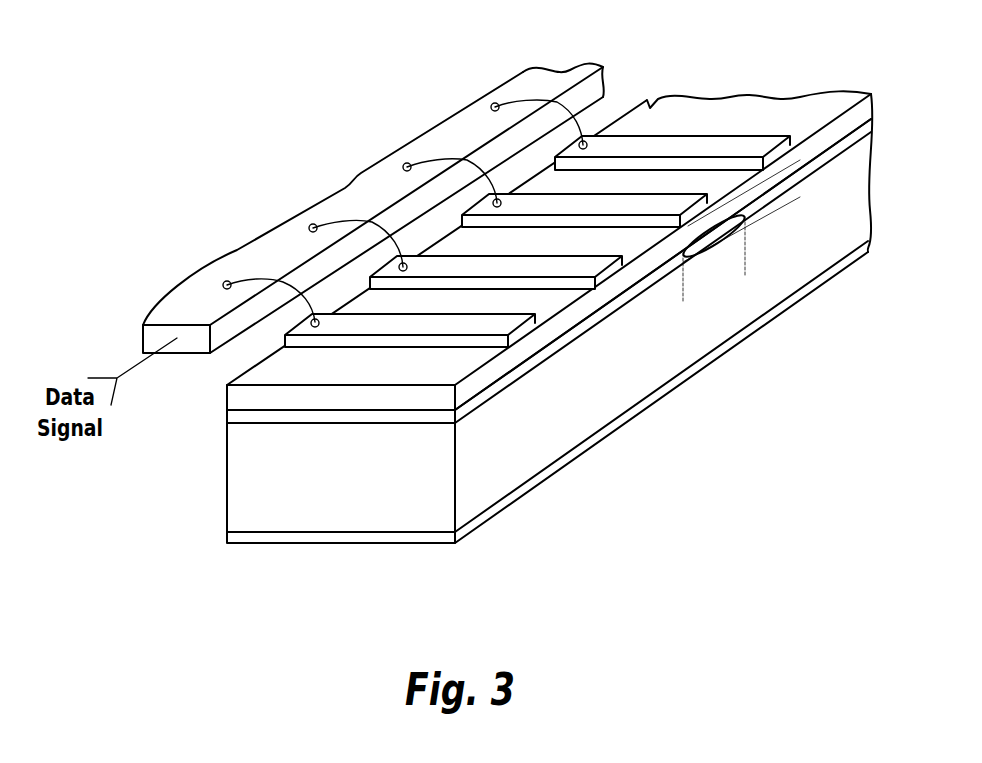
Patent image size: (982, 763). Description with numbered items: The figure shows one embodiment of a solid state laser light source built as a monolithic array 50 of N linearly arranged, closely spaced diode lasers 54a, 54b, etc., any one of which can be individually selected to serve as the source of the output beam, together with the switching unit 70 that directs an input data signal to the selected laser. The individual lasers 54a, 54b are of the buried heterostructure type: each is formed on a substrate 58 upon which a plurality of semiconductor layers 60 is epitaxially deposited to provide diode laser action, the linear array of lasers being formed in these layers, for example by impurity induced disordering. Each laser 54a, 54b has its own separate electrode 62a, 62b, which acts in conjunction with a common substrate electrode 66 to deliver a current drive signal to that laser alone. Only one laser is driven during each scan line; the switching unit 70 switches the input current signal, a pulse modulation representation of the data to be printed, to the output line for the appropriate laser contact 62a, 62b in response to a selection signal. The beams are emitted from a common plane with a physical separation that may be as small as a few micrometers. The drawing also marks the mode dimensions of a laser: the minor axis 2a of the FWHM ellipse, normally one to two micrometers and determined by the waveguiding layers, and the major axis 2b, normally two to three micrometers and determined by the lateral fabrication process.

The monolithic array 50 is at (356, 46).
The diode laser 54a is at (525, 401).
The diode laser 54b is at (612, 341).
The substrate 58 is at (320, 502).
The semiconductor layers 60 is at (240, 415).
The electrode 62a is at (440, 322).
The electrode 62b is at (517, 267).
The substrate electrode 66 is at (800, 292).
The switching unit 70 is at (268, 253).
The minor axis 2a is at (775, 118).
The major axis 2b is at (737, 260).